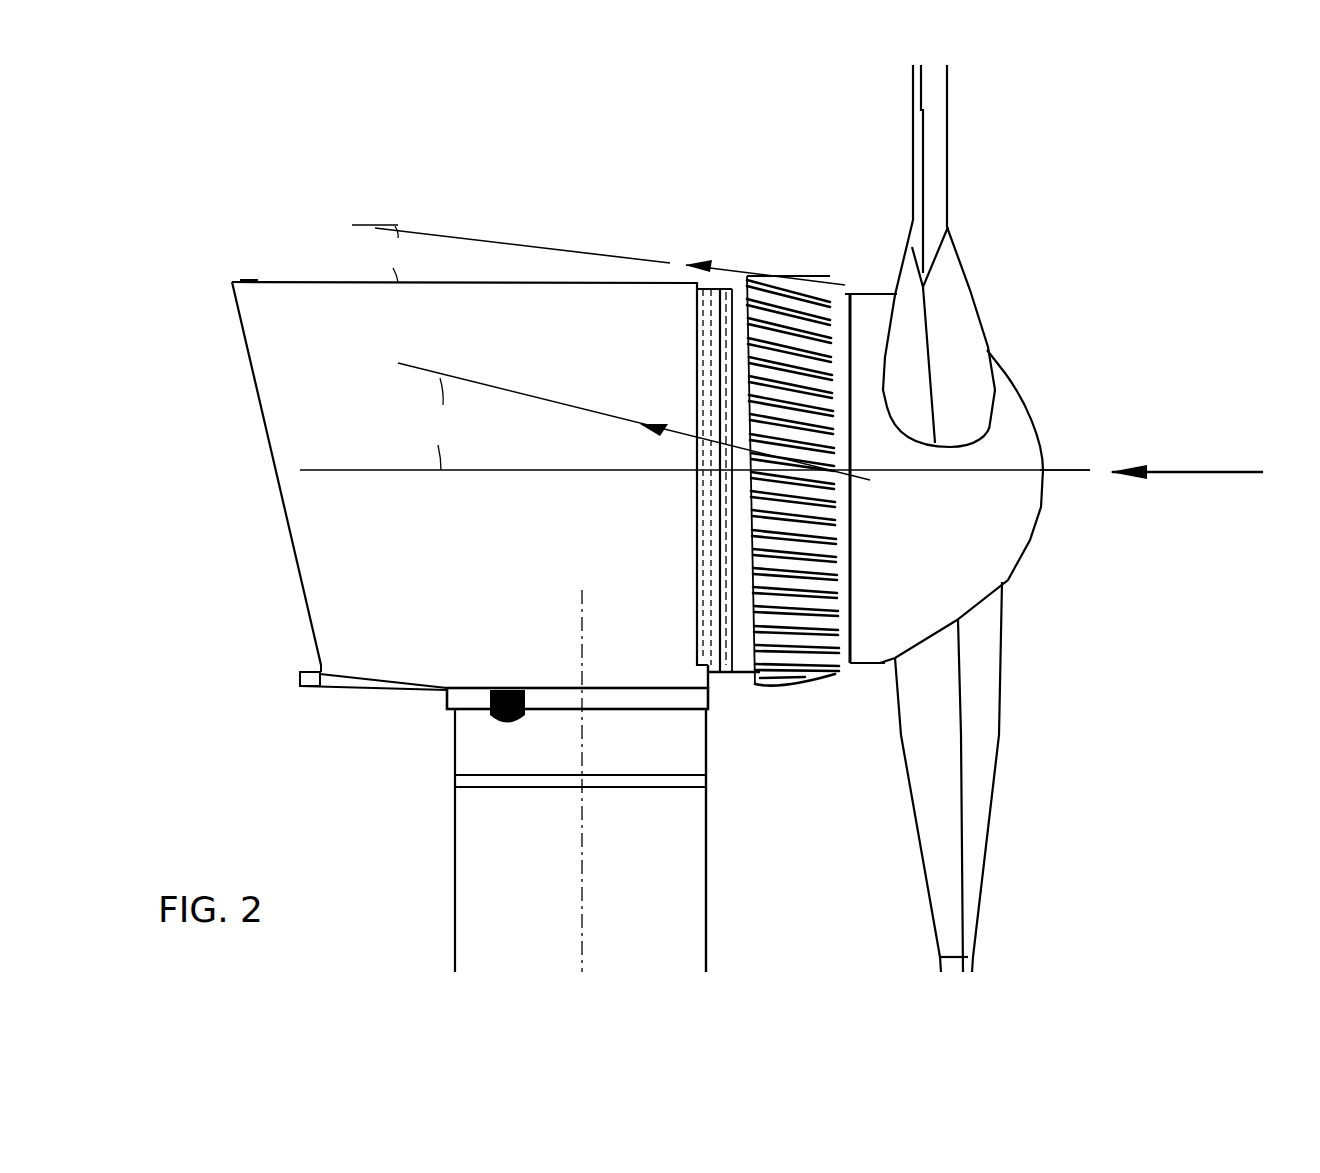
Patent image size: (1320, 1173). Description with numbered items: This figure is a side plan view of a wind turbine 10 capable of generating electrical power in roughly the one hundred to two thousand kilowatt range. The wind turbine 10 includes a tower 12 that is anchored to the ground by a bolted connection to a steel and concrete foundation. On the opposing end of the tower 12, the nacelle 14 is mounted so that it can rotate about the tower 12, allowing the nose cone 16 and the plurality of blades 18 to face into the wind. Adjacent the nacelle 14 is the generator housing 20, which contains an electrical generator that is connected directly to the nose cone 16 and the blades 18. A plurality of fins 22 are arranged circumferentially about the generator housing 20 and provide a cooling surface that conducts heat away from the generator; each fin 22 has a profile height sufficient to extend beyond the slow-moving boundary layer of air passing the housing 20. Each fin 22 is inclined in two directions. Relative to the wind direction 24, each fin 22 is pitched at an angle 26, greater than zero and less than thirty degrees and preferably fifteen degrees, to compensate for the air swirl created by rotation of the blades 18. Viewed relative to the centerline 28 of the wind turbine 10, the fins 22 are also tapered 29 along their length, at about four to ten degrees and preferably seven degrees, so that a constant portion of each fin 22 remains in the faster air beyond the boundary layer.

The wind turbine 10 is at (1108, 230).
The tower 12 is at (448, 838).
The nacelle 14 is at (298, 274).
The nose cone 16 is at (1046, 406).
The blades 18 is at (985, 282).
The generator housing 20 is at (797, 235).
The fins 22 is at (812, 698).
The wind direction 24 is at (1152, 473).
The angle 26 is at (400, 411).
The centerline 28 is at (1015, 470).
The taper 29 is at (380, 238).